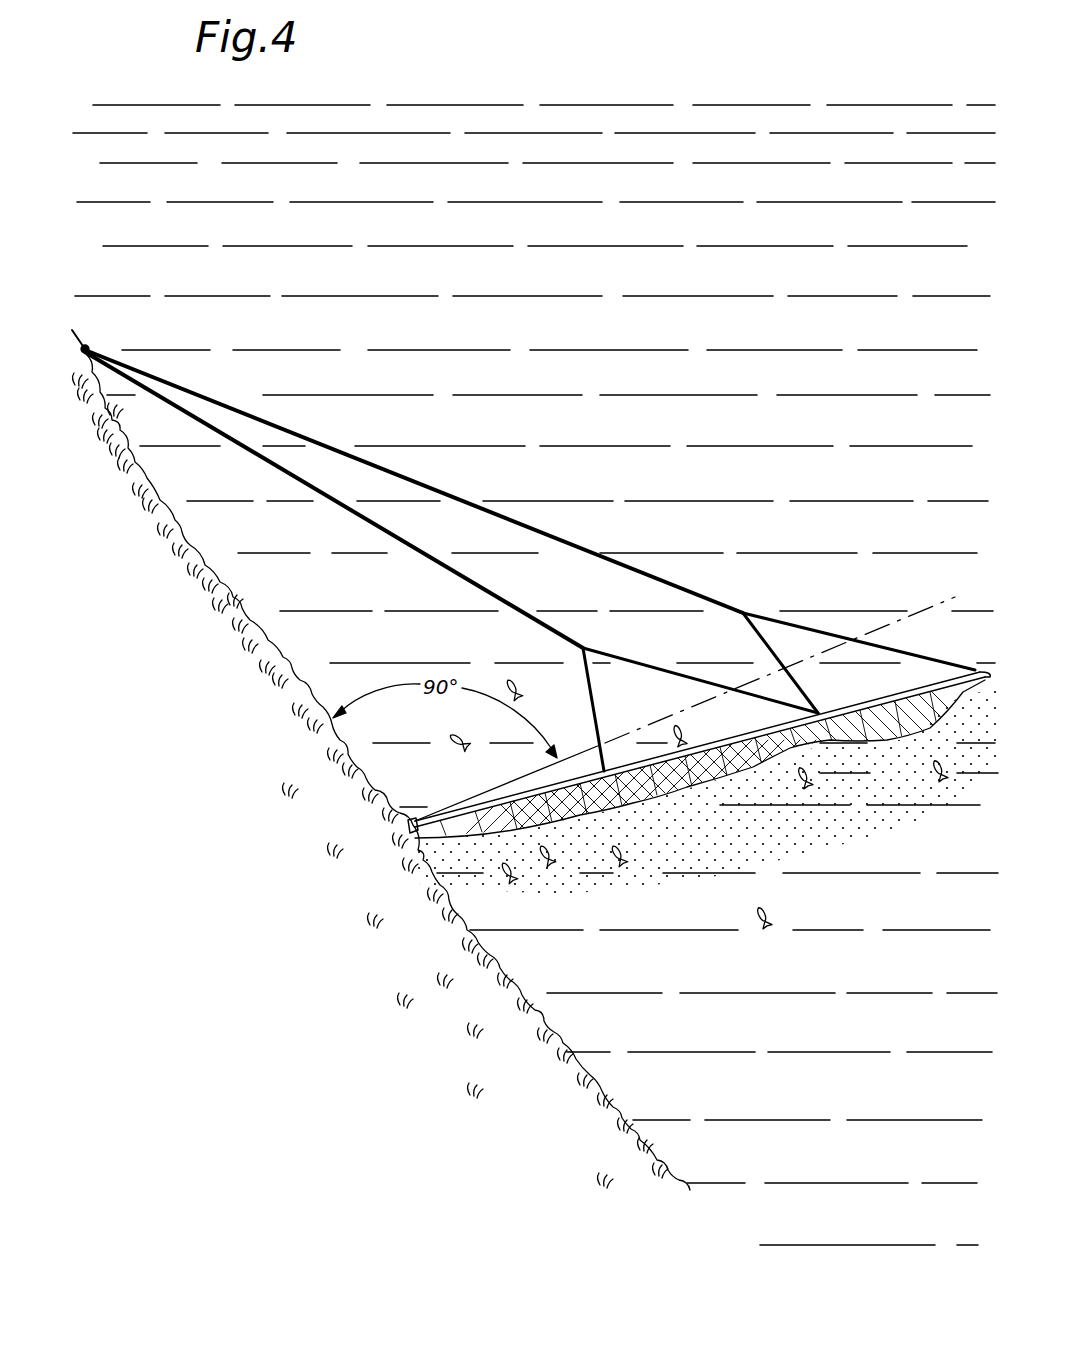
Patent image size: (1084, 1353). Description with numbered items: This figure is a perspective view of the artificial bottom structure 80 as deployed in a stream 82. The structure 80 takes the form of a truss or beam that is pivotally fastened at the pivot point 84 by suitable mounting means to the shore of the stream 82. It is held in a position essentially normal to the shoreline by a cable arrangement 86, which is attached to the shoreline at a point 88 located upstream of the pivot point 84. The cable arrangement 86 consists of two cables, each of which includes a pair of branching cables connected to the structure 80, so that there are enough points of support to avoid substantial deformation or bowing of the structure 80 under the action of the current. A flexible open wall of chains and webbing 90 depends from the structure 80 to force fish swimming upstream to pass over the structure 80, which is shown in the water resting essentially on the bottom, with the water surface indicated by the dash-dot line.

The artificial bottom structure 80 is at (841, 706).
The stream 82 is at (831, 971).
The pivot point 84 is at (411, 817).
The cable arrangement 86 is at (422, 486).
The shoreline attachment point 88 is at (93, 347).
The flexible open wall of chains and webbing 90 is at (893, 736).